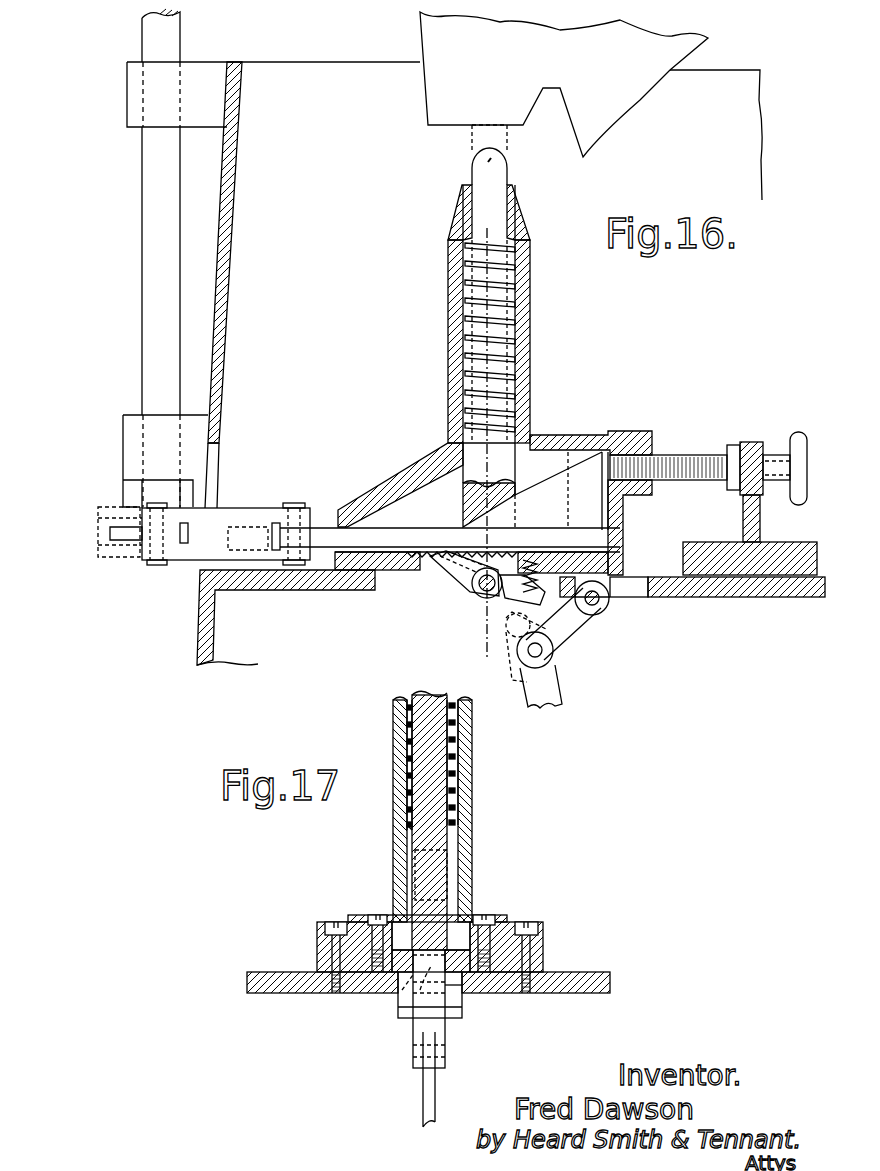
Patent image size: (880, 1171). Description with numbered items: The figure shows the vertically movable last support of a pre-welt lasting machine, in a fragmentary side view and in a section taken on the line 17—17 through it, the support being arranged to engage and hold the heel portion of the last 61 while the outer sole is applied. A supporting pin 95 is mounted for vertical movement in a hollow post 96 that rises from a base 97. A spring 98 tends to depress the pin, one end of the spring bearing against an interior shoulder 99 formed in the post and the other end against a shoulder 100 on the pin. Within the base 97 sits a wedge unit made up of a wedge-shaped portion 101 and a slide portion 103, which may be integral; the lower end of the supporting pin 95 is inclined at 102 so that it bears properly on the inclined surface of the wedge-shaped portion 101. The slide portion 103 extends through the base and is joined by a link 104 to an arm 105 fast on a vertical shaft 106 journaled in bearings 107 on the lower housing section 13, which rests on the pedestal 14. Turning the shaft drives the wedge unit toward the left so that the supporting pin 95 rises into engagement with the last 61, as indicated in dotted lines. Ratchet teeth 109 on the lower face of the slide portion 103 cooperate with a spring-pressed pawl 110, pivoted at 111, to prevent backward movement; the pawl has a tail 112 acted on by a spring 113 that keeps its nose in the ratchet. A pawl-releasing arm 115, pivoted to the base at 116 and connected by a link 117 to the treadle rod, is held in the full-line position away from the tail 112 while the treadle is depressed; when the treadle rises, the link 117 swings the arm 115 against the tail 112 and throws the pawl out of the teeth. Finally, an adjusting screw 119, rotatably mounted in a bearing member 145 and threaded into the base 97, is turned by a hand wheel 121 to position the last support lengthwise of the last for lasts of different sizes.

In FIG. 16, the lower section 13 is at (215, 252).
In FIG. 16, the pedestal 14 is at (200, 621).
In FIG. 17, the pedestal 14 is at (572, 992).
In FIG. 16, the section line 17— 17 is at (489, 397).
In FIG. 16, the last 61 is at (435, 48).
In FIG. 16, the supporting pin 95 is at (512, 230).
In FIG. 17, the supporting pin 95 is at (445, 845).
In FIG. 16, the hollow post 96 is at (448, 312).
In FIG. 17, the hollow post 96 is at (473, 800).
In FIG. 16, the base 97 is at (572, 433).
In FIG. 17, the base 97 is at (476, 895).
In FIG. 16, the spring 98 is at (505, 355).
In FIG. 17, the spring 98 is at (455, 742).
In FIG. 16, the interior shoulder 99 is at (470, 238).
In FIG. 16, the shoulder 100 is at (470, 432).
In FIG. 17, the shoulder 100 is at (408, 832).
In FIG. 16, the wedge-shaped portion 101 is at (565, 505).
In FIG. 17, the wedge-shaped portion 101 is at (440, 925).
In FIG. 16, the inclined lower end 102 is at (478, 505).
In FIG. 16, the slide portion 103 is at (328, 530).
In FIG. 16, the link 104 is at (233, 510).
In FIG. 16, the arm 105 is at (147, 533).
In FIG. 16, the vertical shaft 106 is at (147, 214).
In FIG. 16, the bearings 107 is at (129, 118).
In FIG. 16, the ratchet teeth 109 is at (410, 557).
In FIG. 17, the ratchet teeth 109 is at (400, 993).
In FIG. 16, the spring-pressed pawl 110 is at (443, 560).
In FIG. 17, the spring-pressed pawl 110 is at (418, 993).
In FIG. 16, the pawl pivot 111 is at (476, 590).
In FIG. 17, the pawl pivot 111 is at (456, 985).
In FIG. 16, the tail 112 is at (547, 652).
In FIG. 16, the spring 113 is at (585, 630).
In FIG. 16, the pawl-releasing arm 115 is at (595, 612).
In FIG. 17, the pawl-releasing arm 115 is at (422, 1022).
In FIG. 16, the pivot 116 is at (602, 601).
In FIG. 16, the link 117 is at (556, 690).
In FIG. 17, the link 117 is at (428, 1098).
In FIG. 16, the adjusting screw 119 is at (672, 452).
In FIG. 16, the hand wheel 121 is at (798, 432).
In FIG. 16, the bearing member 145 is at (752, 444).